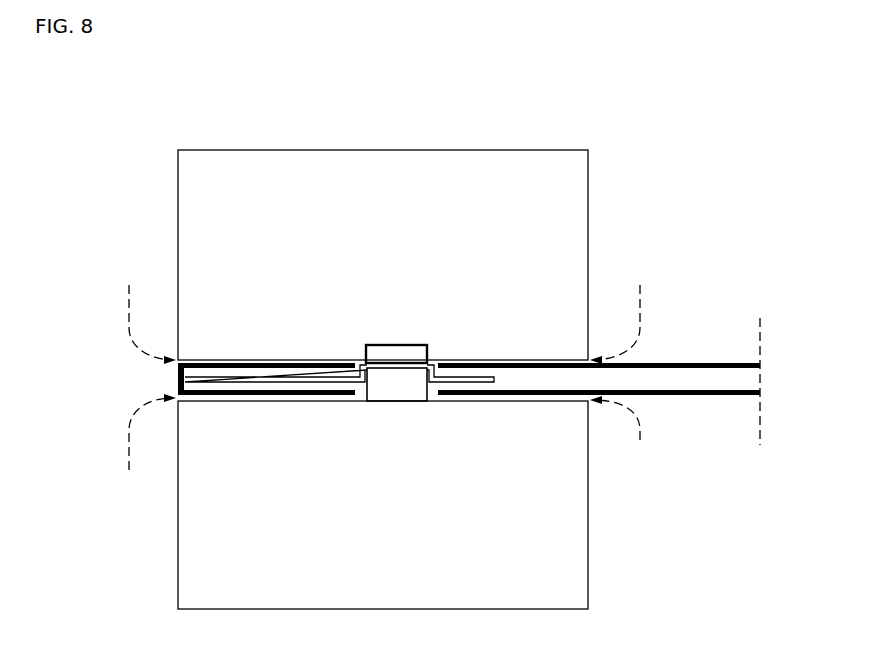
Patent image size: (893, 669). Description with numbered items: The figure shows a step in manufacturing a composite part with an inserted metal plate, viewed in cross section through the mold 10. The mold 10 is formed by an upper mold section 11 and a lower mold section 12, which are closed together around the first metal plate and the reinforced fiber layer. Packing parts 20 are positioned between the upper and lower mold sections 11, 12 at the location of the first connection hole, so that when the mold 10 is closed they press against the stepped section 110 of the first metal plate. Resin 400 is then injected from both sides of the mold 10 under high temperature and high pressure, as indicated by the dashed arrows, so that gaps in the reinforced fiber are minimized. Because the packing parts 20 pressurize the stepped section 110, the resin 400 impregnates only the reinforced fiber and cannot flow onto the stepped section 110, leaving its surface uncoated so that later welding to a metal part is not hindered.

The mold 10 is at (449, 383).
The upper mold section 11 is at (577, 197).
The lower mold section 12 is at (577, 540).
The packing parts 20 is at (381, 357).
The stepped section 110 is at (419, 357).
The resin 400 is at (130, 320).